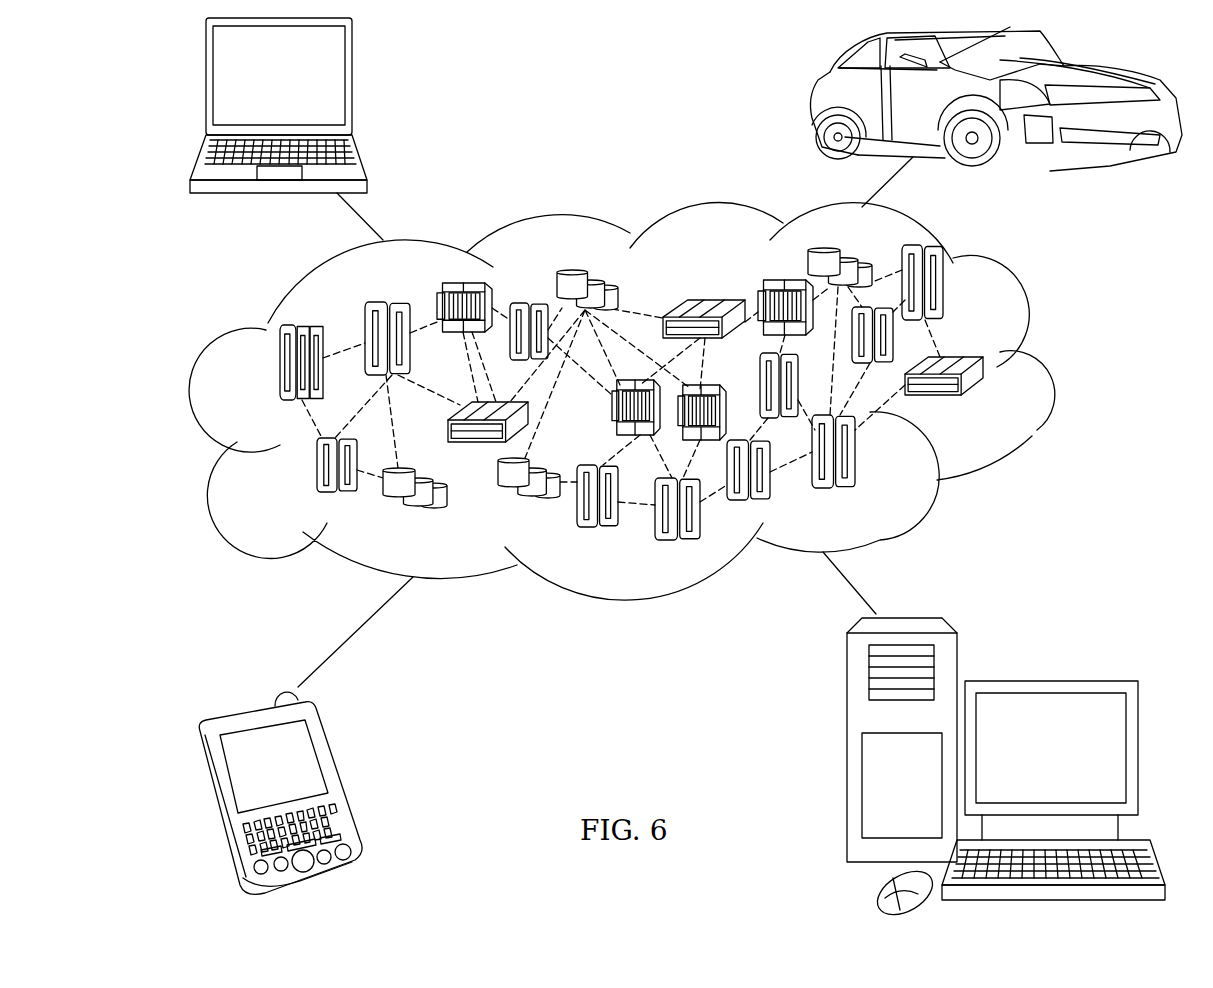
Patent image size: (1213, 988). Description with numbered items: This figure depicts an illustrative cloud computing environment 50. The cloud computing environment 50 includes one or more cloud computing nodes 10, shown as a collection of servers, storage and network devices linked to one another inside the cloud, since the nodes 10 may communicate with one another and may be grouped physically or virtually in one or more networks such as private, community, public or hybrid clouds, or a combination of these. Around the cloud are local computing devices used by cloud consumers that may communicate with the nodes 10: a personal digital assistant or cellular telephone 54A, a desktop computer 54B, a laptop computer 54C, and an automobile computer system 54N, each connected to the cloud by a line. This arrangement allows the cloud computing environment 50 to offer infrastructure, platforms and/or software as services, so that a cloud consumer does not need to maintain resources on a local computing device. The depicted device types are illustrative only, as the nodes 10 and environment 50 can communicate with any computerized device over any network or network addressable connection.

The laptop computer 54C is at (353, 84).
The automobile computer system 54N is at (817, 100).
The personal digital assistant (PDA) or cellular telephone 54A is at (342, 780).
The desktop computer 54B is at (1048, 681).
The cloud computing environment 50 is at (652, 402).
The cloud computing node 10 is at (988, 407).